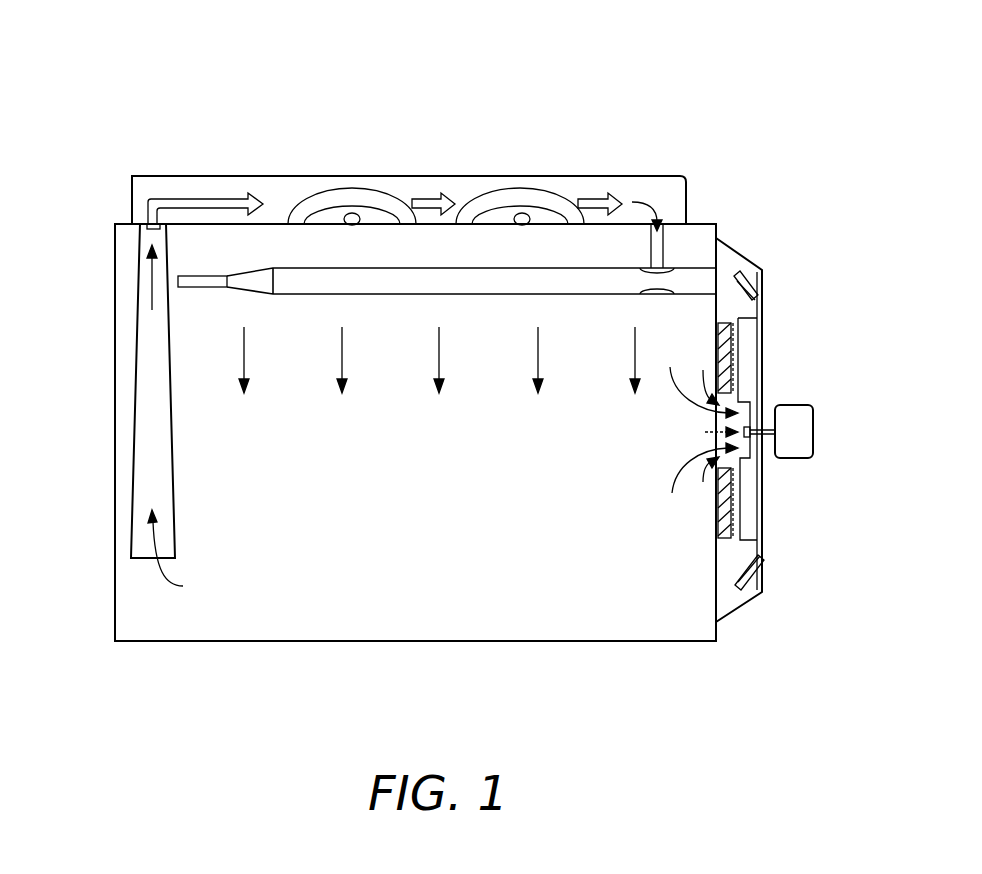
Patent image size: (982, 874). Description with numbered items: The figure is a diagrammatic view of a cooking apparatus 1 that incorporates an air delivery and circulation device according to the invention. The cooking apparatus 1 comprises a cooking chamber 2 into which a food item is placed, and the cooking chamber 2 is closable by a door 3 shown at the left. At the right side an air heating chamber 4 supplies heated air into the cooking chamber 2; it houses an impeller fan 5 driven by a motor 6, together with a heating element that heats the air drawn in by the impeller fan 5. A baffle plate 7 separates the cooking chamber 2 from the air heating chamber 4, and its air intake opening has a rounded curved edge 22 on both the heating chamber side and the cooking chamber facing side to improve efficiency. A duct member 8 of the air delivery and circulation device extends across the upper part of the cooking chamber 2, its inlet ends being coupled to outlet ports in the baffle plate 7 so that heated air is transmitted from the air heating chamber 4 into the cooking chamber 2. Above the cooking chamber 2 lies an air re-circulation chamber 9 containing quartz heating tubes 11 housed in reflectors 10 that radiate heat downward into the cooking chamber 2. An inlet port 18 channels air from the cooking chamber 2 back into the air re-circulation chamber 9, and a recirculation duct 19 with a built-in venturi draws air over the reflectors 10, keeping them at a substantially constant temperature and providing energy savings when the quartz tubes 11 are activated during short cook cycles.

The cooking apparatus 1 is at (528, 142).
The cooking chamber 2 is at (312, 592).
The door 3 is at (115, 462).
The air heating chamber 4 is at (728, 257).
The impeller fan 5 is at (753, 520).
The motor 6 is at (785, 410).
The baffle plate 7 is at (720, 595).
The duct member 8 is at (310, 283).
The air re-circulation chamber 9 is at (471, 176).
The reflectors 10 is at (319, 192).
The quartz heating tubes 11 is at (353, 213).
The inlet port 18 is at (150, 228).
The recirculation duct 19 is at (662, 238).
The curved edge 22 is at (731, 393).